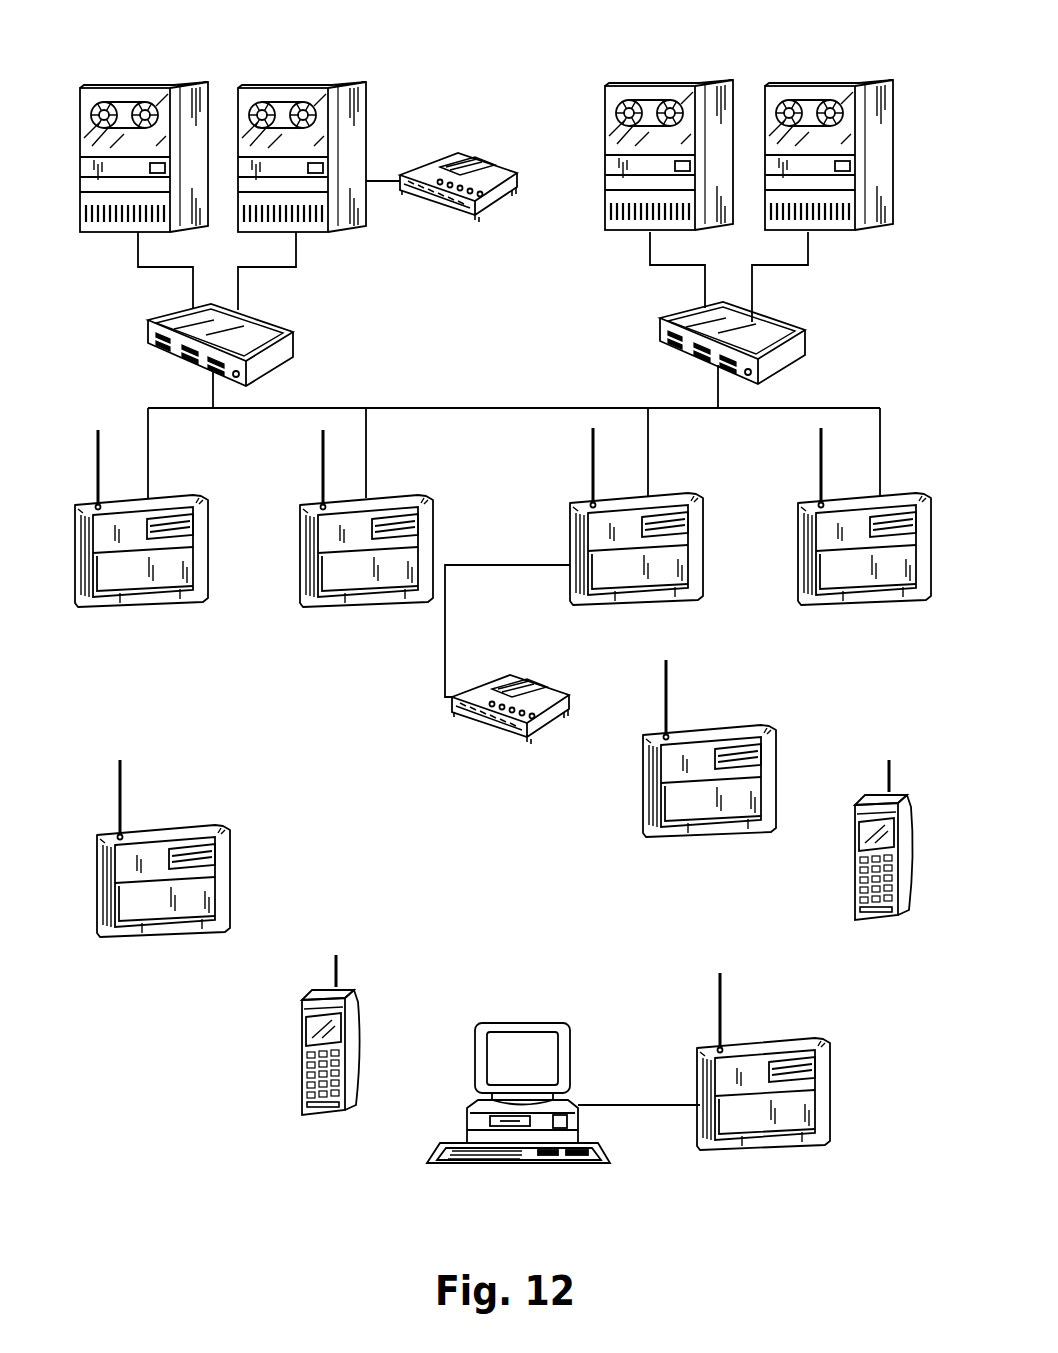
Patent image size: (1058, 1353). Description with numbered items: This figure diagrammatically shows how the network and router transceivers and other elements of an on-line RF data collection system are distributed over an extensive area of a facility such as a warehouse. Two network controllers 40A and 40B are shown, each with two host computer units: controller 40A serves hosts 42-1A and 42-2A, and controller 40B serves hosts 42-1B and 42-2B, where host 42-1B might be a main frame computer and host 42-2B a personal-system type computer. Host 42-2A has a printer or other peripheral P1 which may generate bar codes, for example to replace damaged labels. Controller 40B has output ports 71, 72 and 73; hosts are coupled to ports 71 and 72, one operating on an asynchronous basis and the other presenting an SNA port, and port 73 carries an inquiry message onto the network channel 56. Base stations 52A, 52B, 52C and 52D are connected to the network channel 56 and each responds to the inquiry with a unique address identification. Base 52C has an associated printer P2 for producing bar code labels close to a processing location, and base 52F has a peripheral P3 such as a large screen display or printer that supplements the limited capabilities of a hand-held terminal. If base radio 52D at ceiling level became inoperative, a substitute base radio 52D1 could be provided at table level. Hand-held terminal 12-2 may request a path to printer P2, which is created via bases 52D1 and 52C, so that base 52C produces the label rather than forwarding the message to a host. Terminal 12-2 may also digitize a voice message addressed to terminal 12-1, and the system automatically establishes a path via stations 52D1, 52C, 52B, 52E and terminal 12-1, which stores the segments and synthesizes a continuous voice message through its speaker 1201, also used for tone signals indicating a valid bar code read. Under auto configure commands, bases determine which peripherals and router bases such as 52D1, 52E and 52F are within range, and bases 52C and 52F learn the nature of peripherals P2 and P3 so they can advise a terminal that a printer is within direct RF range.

The host computer unit 42-1A is at (118, 88).
The host computer 42-2A is at (277, 88).
The host computer 42-1B is at (623, 86).
The host computer 42-2B is at (790, 86).
The printer or other peripheral P1 is at (497, 173).
The network controller 40A is at (258, 321).
The network controller 40B is at (668, 345).
The output port 71 is at (707, 310).
The output port 72 is at (775, 328).
The output port 73 is at (713, 378).
The network channel 56 is at (547, 397).
The base station 52A is at (119, 604).
The base station 52B is at (386, 604).
The base station 52C is at (648, 604).
The base radio 52D is at (911, 604).
The printer P2 is at (488, 697).
The substitute base radio 52D1 is at (712, 843).
The hand-held terminal 12-2 is at (855, 812).
The speaker 1201 is at (298, 1093).
The router base 52E is at (131, 944).
The hand-held terminal 12-1 is at (354, 1009).
The peripheral P3 is at (552, 1023).
The base 52F is at (752, 1160).